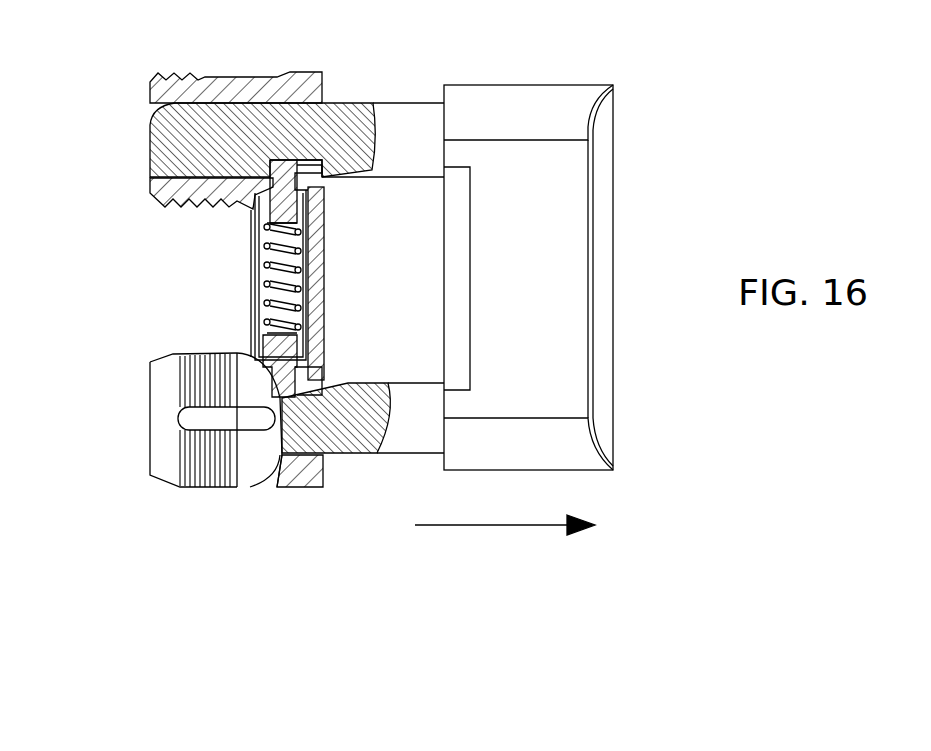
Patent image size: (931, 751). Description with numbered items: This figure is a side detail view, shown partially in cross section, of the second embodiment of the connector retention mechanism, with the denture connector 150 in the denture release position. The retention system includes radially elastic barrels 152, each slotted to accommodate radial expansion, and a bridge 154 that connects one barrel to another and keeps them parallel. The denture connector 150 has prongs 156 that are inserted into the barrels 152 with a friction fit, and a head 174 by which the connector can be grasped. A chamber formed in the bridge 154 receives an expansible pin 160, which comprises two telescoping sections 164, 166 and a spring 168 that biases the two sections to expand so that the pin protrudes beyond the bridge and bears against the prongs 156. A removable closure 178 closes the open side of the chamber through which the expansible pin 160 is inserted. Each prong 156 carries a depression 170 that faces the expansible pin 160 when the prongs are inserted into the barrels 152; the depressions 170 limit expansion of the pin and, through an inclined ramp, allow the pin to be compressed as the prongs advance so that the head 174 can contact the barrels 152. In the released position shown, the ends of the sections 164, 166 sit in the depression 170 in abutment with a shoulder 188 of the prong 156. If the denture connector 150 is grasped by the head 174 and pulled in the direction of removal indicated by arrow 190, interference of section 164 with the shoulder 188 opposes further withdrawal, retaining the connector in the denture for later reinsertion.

The denture connector 150 is at (656, 112).
The barrel 152 is at (216, 50).
The bridge 154 is at (198, 320).
The prong 156 is at (388, 103).
The expansible pin 160 is at (206, 243).
The telescoping section 164 is at (292, 214).
The telescoping section 166 is at (300, 349).
The spring 168 is at (275, 277).
The depression 170 is at (342, 188).
The head 174 is at (548, 262).
The removable closure 178 is at (324, 267).
The shoulder 188 is at (280, 174).
The arrow 190 is at (515, 528).